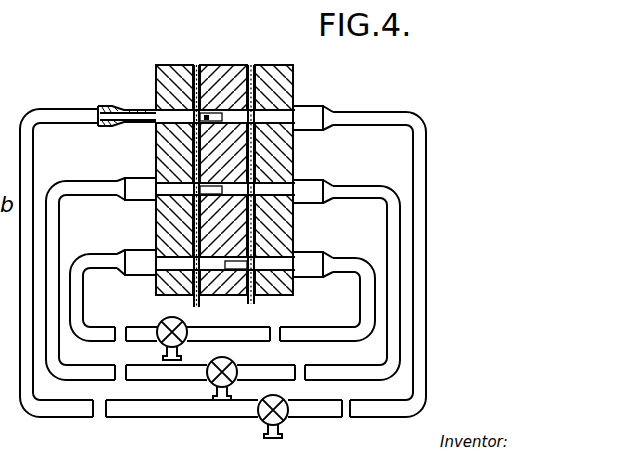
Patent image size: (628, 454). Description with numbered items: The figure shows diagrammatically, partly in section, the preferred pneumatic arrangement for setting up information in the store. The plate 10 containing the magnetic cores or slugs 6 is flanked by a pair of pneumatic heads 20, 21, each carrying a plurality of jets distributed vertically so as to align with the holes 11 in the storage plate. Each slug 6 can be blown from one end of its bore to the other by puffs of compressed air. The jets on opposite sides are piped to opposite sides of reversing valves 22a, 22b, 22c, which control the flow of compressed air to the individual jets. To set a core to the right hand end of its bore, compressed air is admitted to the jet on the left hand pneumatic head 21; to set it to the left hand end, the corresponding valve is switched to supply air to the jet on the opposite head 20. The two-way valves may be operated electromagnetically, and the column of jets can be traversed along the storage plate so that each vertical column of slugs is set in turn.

The magnetic slug 6 is at (206, 116).
The plate 10 is at (217, 80).
The holes 11 is at (240, 112).
The pneumatic head 20 is at (297, 76).
The pneumatic head 21 is at (155, 71).
The reversing valve 22a is at (187, 325).
The reversing valve 22b is at (214, 381).
The reversing valve 22c is at (263, 421).